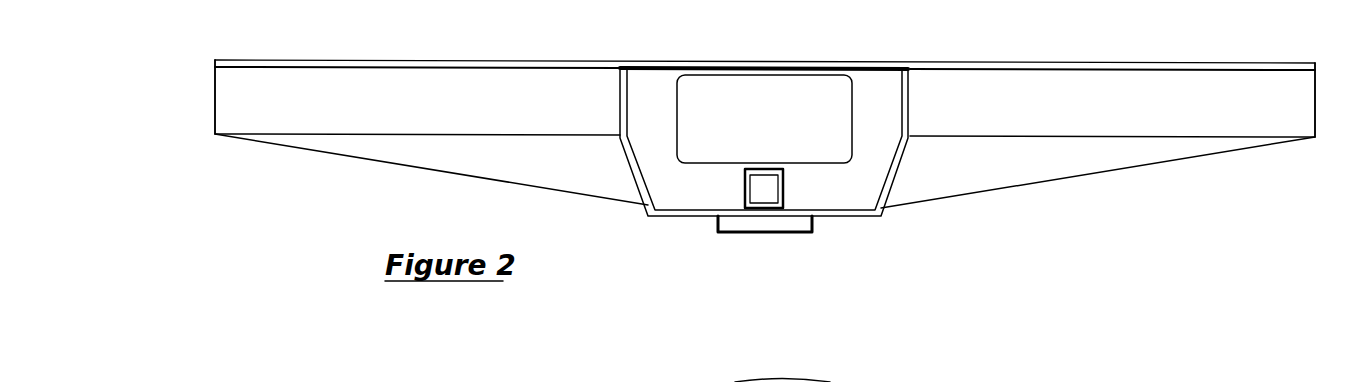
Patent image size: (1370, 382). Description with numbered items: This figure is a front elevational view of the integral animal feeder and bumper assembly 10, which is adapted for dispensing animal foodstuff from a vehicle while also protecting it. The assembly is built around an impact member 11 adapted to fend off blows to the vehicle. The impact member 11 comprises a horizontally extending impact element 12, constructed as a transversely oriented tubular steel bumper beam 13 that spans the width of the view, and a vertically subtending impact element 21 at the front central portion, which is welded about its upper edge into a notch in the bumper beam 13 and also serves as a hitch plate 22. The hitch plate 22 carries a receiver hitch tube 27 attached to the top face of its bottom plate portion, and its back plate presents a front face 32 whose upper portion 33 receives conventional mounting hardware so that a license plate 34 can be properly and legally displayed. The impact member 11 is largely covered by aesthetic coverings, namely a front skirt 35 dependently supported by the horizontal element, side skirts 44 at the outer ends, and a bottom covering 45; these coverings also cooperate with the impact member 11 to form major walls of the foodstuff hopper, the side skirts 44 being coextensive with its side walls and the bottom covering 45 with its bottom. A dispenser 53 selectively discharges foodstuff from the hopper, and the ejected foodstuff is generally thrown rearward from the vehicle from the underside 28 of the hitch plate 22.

The integral animal feeder and bumper assembly 10 is at (337, 191).
The impact member 11 is at (1063, 95).
The horizontally extending impact element 12 is at (413, 100).
The tubular steel bumper beam 13 is at (1174, 124).
The vertically subtending impact element 21 is at (872, 82).
The hitch plate 22 is at (665, 190).
The receiver hitch tube 27 is at (745, 188).
The underside 28 is at (690, 236).
The front face 32 is at (655, 92).
The upper portion 33 is at (652, 112).
The license plate 34 is at (745, 90).
The front skirt 35 is at (480, 158).
The side skirts 44 is at (213, 102).
The bottom covering 45 is at (1013, 207).
The dispenser 53 is at (786, 240).